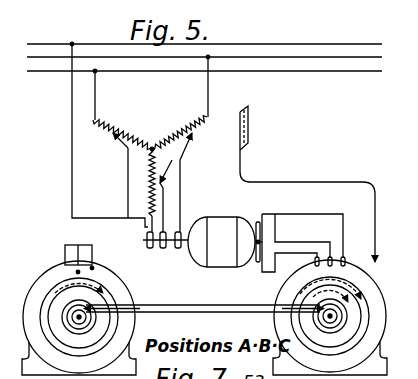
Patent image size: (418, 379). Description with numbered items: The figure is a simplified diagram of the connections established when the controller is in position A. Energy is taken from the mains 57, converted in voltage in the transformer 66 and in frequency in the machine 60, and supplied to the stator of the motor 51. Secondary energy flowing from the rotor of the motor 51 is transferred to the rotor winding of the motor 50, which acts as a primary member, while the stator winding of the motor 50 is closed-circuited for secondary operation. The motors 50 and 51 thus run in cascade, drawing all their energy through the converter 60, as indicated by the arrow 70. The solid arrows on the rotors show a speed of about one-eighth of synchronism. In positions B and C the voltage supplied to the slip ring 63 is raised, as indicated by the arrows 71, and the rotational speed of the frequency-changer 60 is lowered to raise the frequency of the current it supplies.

The mains 57 is at (314, 57).
The transformer 66 is at (134, 117).
The arrows 71 is at (156, 182).
The slip ring 63 is at (165, 252).
The frequency-changer 60 is at (235, 289).
The arrow 70 is at (329, 182).
The motor 50 is at (133, 300).
The motor 51 is at (387, 306).